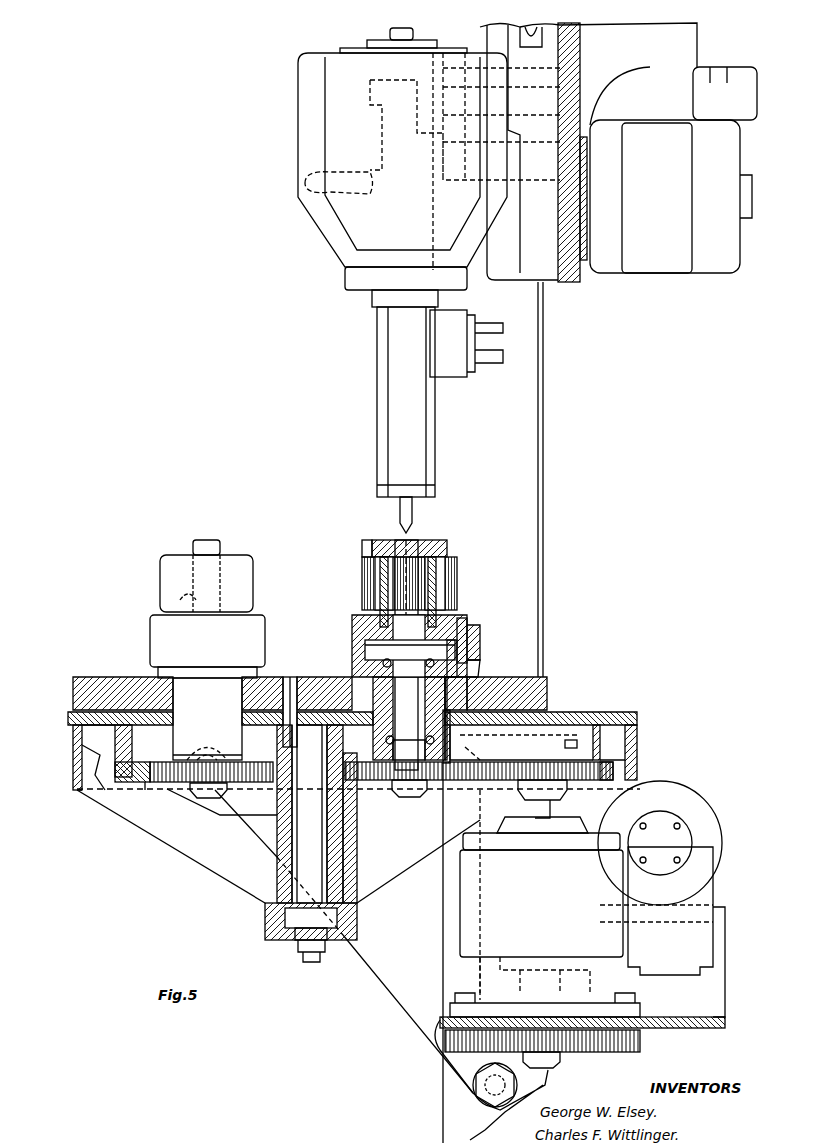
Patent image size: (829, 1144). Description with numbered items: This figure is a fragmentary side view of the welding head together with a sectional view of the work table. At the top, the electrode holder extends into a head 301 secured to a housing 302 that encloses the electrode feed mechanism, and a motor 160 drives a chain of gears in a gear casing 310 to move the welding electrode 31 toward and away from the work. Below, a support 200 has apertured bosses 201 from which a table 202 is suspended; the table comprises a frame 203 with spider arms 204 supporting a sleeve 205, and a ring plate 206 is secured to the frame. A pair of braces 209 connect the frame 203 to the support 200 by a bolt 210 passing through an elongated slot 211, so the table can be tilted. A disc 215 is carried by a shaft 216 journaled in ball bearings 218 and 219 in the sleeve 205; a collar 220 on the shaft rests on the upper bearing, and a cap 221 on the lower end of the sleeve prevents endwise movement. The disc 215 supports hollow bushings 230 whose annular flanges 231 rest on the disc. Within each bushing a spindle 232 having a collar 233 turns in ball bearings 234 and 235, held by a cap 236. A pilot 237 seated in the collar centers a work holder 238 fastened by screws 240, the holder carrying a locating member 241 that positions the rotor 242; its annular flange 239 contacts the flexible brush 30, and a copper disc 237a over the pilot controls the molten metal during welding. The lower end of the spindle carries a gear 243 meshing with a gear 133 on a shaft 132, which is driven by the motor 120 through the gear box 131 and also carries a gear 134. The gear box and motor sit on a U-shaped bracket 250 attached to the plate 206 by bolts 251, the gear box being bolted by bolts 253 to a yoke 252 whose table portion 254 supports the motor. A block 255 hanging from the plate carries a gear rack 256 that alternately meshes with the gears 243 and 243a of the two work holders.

The housing 302 is at (318, 228).
The head 301 is at (377, 428).
The welding electrode 31 is at (412, 510).
The gear casing 310 is at (552, 282).
The motor 160 is at (725, 273).
The support 200 is at (540, 472).
The apertured bosses 201 is at (395, 545).
The pilot 237 is at (432, 540).
The copper disc 237a is at (372, 549).
The rotor 242 is at (362, 575).
The locating member 241 is at (382, 615).
The screws 240 is at (440, 610).
The collar 233 is at (365, 630).
The annular flange 239 is at (372, 650).
The spindle 232 is at (400, 690).
The cap 236 is at (385, 785).
The ball bearing 235 is at (430, 797).
The collar 220 is at (298, 710).
The ball bearing / screws 219 is at (280, 677).
The work holder 238 is at (150, 636).
The flexible brush 30 is at (467, 635).
The ball bearing 234 is at (475, 665).
The annular flange 231 is at (218, 678).
The hollow bushing 230 is at (188, 690).
The disc 215 is at (78, 690).
The ring plate 206 is at (70, 718).
The table 202 is at (75, 745).
The frame 203 is at (77, 790).
The spider arms 204 is at (148, 832).
The sleeve 205 is at (342, 850).
The shaft 216 is at (290, 872).
The ball bearing 218 is at (298, 790).
The cap 221 is at (268, 940).
The braces 209 is at (400, 992).
The gear 243 is at (365, 783).
The gear 243a is at (175, 800).
The gear rack 256 is at (145, 792).
The block 255 is at (85, 795).
The gear 133 is at (620, 768).
The bolts 251 is at (572, 733).
The shaft 132 is at (535, 810).
The U-shaped bracket 250 is at (590, 820).
The motor 120 is at (715, 825).
The gear box 131 is at (700, 950).
The table portion 254 is at (725, 930).
The bolts 253 is at (636, 997).
The yoke 252 is at (690, 1028).
The gear 134 is at (640, 1045).
The elongated slot 211 is at (472, 1068).
The bolt 210 is at (495, 1105).